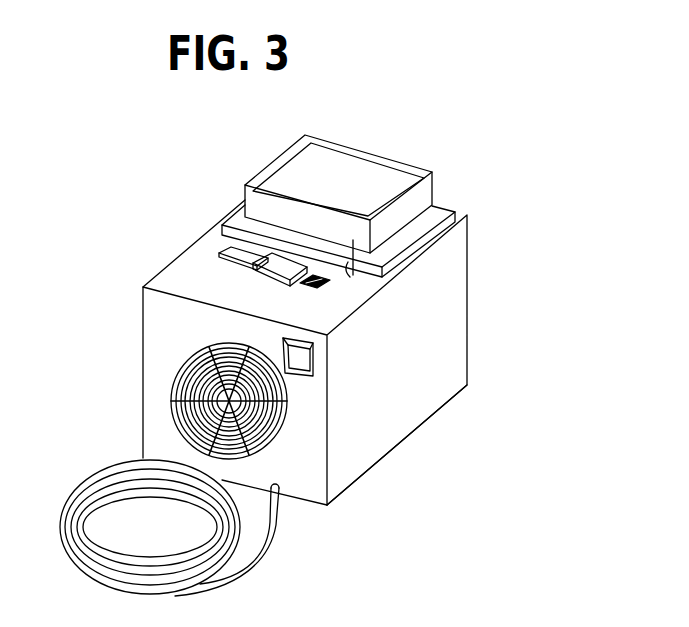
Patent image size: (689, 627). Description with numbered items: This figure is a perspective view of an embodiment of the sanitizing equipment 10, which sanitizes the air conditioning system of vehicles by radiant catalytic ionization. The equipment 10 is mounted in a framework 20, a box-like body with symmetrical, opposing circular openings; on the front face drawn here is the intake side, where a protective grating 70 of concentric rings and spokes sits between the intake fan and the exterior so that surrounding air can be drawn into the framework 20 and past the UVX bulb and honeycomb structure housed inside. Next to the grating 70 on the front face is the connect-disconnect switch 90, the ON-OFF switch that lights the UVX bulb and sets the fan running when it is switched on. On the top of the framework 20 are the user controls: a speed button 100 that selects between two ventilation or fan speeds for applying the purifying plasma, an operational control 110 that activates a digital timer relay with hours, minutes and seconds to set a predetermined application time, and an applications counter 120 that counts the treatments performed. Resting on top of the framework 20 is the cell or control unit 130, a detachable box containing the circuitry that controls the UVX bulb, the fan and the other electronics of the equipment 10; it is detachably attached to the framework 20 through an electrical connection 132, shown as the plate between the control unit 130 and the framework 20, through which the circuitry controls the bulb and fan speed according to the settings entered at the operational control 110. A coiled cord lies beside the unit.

The sanitizing equipment 10 is at (130, 177).
The framework 20 is at (460, 216).
The protective grating 70 is at (172, 398).
The connect-disconnect switch 90 is at (305, 372).
The speed button 100 is at (415, 322).
The operational control 110 is at (248, 274).
The applications counter 120 is at (217, 256).
The control unit 130 is at (365, 170).
The electrical connection 132 is at (380, 254).